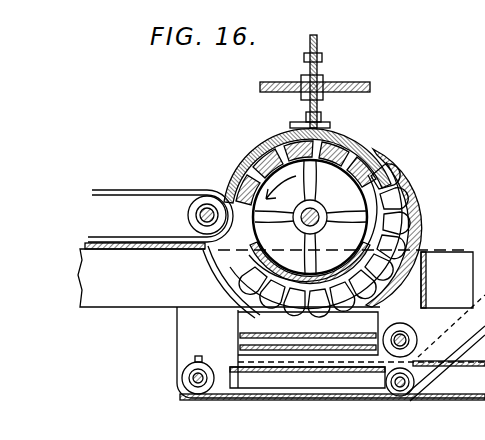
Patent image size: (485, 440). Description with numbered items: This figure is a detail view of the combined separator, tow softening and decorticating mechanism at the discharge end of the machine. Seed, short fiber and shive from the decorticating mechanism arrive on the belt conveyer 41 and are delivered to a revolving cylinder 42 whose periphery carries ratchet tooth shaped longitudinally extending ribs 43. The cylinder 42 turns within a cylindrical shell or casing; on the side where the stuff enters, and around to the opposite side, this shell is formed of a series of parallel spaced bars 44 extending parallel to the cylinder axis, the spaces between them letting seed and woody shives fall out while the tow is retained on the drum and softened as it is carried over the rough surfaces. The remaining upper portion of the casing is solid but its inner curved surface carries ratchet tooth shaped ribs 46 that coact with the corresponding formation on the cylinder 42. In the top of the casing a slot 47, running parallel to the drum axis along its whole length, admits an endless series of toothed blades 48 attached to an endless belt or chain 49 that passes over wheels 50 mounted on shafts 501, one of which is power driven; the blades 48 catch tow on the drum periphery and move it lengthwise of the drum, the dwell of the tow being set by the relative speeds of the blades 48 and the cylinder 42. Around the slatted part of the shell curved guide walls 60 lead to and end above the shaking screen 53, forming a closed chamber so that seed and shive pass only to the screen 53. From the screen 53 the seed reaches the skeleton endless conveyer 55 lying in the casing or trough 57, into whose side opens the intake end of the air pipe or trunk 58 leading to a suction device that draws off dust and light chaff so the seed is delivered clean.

The belt conveyer 41 is at (160, 216).
The cylinder 42 is at (310, 222).
The ratchet tooth shaped longitudinally extending ribs 43 is at (222, 188).
The parallel spaced bars 44 is at (240, 297).
The ratchet tooth shaped ribs 46 is at (250, 156).
The slot 47 is at (290, 124).
The blades 48 is at (315, 52).
The endless belt or chain 49 is at (323, 57).
The wheels 50 is at (302, 76).
The shafts 501 is at (366, 82).
The shaking screen 53 is at (256, 340).
The skeleton endless conveyer 55 is at (212, 396).
The casing or trough 57 is at (200, 350).
The air pipe or trunk 58 is at (260, 378).
The curved guide walls 60 is at (205, 263).